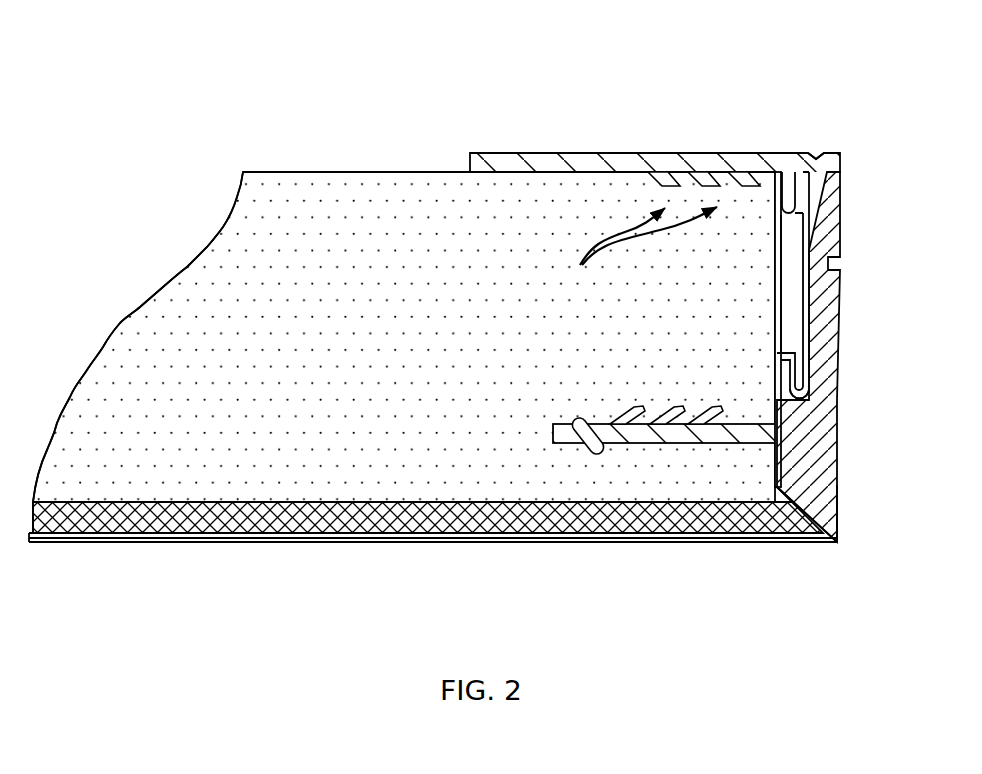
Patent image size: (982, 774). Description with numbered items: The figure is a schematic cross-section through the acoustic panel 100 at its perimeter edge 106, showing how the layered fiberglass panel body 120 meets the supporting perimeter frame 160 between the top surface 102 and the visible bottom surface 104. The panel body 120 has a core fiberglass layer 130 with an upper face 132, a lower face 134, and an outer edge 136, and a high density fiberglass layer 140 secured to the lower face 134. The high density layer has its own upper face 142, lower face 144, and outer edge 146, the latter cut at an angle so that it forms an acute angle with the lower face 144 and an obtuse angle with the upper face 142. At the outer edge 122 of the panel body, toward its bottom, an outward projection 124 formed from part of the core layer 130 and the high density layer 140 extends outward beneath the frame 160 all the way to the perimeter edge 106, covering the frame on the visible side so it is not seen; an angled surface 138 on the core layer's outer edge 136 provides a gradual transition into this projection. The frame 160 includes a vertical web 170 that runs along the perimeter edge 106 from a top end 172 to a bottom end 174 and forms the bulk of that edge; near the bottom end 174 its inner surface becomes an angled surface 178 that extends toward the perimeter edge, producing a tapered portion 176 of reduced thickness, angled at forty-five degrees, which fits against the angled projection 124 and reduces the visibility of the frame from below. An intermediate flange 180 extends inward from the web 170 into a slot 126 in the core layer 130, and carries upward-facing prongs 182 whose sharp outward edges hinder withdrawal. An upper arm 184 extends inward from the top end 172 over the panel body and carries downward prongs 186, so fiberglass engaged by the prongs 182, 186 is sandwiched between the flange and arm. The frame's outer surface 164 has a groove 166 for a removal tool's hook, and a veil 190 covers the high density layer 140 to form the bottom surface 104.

The acoustic panel 100 is at (130, 120).
The top surface 102 is at (292, 160).
The bottom surface 104 is at (177, 568).
The perimeter edge 106 is at (860, 288).
The layered fiberglass panel body 120 is at (108, 297).
The outer edge of layered fiberglass panel body 122 is at (783, 272).
The outward projection 124 is at (778, 563).
The slot 126 is at (553, 436).
The core fiberglass layer 130 is at (431, 363).
The upper face 132 is at (382, 172).
The lower face 134 is at (260, 508).
The outer edge of core fiberglass layer 136 is at (790, 305).
The angled surface 138 is at (783, 492).
The high density fiberglass layer 140 is at (380, 527).
The upper face of high density fiberglass layer 142 is at (462, 500).
The lower face of high density fiberglass layer 144 is at (510, 538).
The outer edge of high density fiberglass layer 146 is at (858, 567).
The supporting perimeter frame 160 is at (745, 110).
The outer surface of perimeter frame 164 is at (840, 371).
The groove 166 is at (828, 240).
The vertical web 170 is at (802, 301).
The top end 172 is at (828, 140).
The bottom end 174 is at (858, 555).
The tapered portion 176 is at (848, 485).
The angled surface of vertical web 178 is at (780, 490).
The intermediate flange 180 is at (584, 424).
The prongs of intermediate flange 182 is at (677, 382).
The upper arm 184 is at (533, 172).
The prongs of upper arm 186 is at (636, 252).
The veil 190 is at (612, 542).